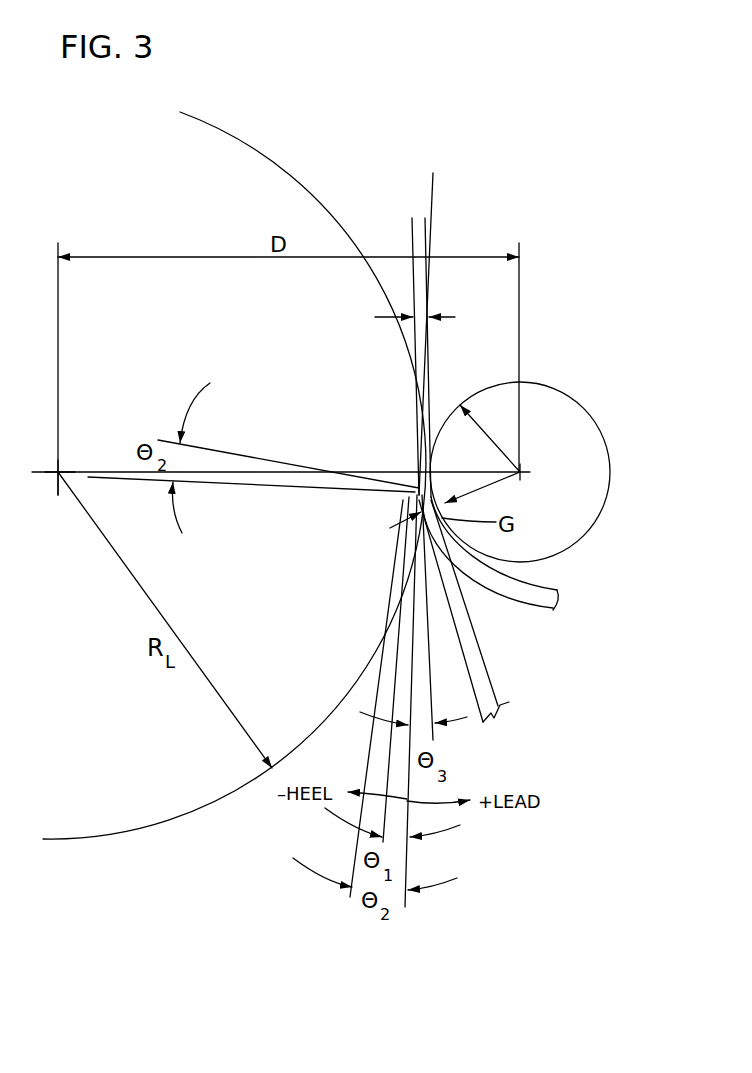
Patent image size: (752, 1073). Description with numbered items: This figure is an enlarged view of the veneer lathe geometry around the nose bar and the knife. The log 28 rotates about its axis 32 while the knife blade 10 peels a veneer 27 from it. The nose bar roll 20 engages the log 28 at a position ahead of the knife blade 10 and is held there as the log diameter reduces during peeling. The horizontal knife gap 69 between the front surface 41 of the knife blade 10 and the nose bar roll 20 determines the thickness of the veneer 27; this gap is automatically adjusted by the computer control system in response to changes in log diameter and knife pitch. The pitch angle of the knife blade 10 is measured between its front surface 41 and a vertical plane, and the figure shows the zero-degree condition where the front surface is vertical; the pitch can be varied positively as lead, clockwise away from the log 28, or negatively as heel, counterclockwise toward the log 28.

The knife blade 10 is at (483, 645).
The nose bar roll 20 is at (588, 410).
The veneer 27 is at (557, 586).
The log 28 is at (289, 170).
The axis 32 is at (57, 474).
The front surface of the knife blade 41 is at (415, 543).
The horizontal knife gap 69 is at (433, 307).